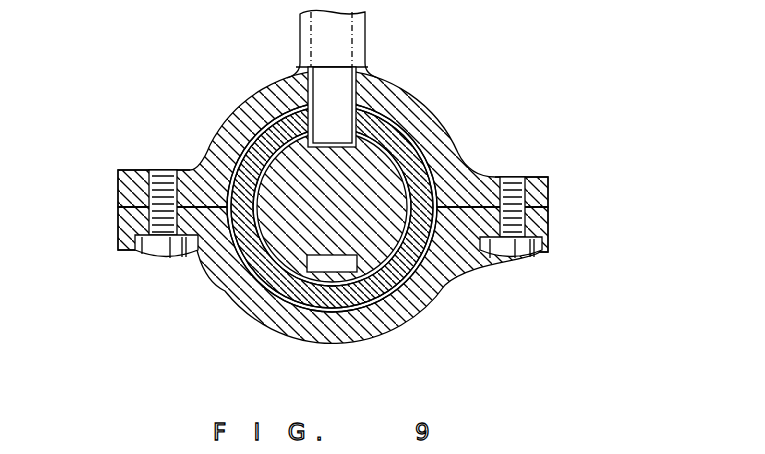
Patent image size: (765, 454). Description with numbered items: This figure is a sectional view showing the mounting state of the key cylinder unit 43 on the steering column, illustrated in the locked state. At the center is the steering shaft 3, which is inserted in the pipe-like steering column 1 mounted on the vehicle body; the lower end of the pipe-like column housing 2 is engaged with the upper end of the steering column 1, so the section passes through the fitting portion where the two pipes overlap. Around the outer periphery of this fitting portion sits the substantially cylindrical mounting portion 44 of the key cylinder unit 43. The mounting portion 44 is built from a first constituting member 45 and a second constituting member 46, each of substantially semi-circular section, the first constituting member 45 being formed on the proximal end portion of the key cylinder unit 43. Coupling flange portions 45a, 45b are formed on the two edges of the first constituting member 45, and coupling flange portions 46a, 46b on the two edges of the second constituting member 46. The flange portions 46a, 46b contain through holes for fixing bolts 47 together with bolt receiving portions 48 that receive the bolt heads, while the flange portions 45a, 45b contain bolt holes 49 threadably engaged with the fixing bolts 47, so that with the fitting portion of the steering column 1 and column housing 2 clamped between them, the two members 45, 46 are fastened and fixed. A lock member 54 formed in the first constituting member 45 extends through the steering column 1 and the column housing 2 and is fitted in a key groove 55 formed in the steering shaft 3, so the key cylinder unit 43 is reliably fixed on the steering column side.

The steering column 1 is at (325, 217).
The column housing 2 is at (395, 312).
The steering shaft 3 is at (400, 103).
The key cylinder unit 43 is at (300, 44).
The mounting portion 44 is at (430, 127).
The first constituting member 45 is at (250, 102).
The coupling flange portion 45a is at (118, 170).
The coupling flange portion 45b is at (550, 178).
The second constituting member 46 is at (258, 310).
The coupling flange portion 46a is at (118, 224).
The coupling flange portion 46b is at (540, 226).
The fixing bolt 47 is at (143, 260).
The bolt receiving portion 48 is at (195, 260).
The bolt hole 49 is at (156, 175).
The lock member 54 is at (352, 40).
The key groove 55 is at (318, 274).